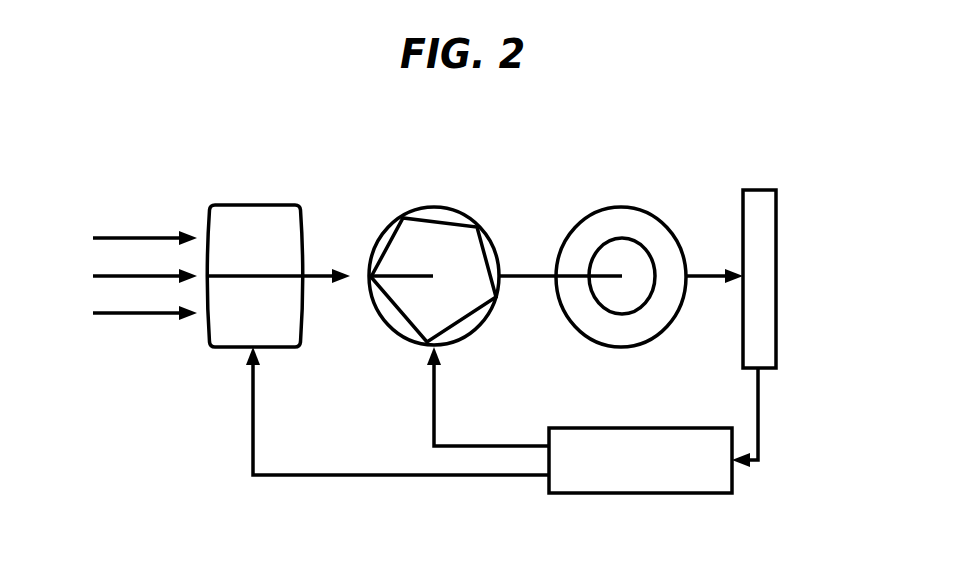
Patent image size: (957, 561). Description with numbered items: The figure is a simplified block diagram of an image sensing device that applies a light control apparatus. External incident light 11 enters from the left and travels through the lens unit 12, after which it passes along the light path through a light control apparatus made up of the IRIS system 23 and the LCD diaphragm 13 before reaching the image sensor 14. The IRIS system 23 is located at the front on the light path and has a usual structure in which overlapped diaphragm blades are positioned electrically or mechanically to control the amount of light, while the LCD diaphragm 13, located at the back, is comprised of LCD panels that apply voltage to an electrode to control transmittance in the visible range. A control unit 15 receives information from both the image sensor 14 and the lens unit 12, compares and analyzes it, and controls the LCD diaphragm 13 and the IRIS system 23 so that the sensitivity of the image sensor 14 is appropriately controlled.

The external incident light 11 is at (129, 240).
The lens unit 12 is at (255, 205).
The LCD diaphragm 13 is at (620, 207).
The image sensor 14 is at (757, 188).
The control unit 15 is at (734, 484).
The IRIS system 23 is at (425, 206).